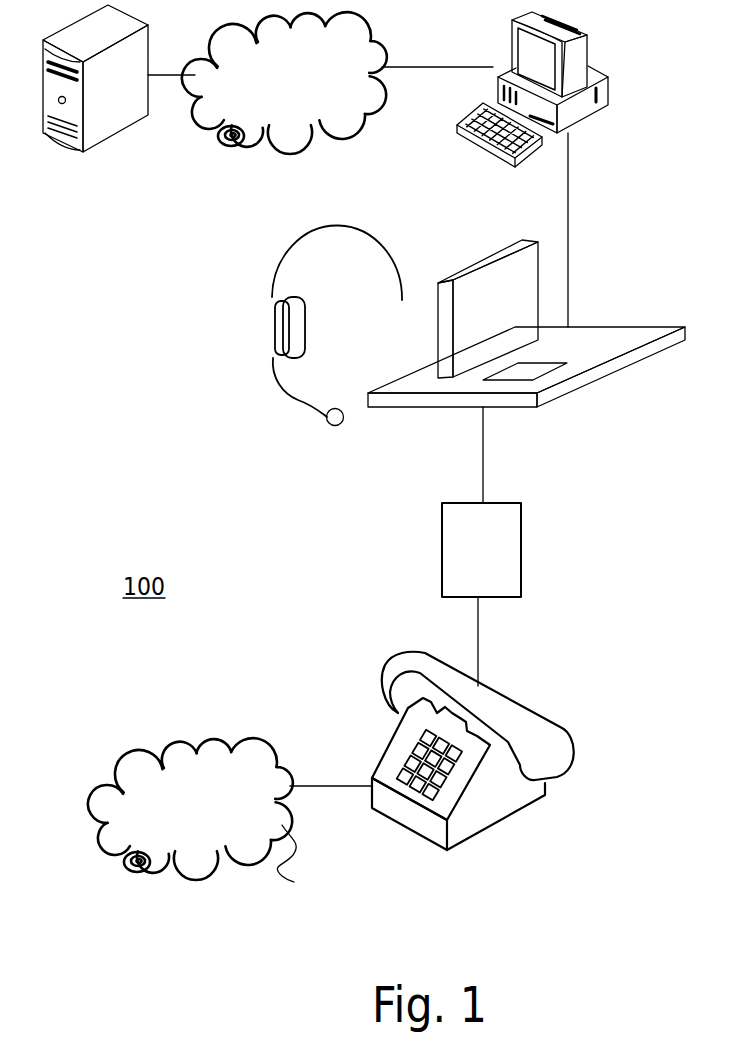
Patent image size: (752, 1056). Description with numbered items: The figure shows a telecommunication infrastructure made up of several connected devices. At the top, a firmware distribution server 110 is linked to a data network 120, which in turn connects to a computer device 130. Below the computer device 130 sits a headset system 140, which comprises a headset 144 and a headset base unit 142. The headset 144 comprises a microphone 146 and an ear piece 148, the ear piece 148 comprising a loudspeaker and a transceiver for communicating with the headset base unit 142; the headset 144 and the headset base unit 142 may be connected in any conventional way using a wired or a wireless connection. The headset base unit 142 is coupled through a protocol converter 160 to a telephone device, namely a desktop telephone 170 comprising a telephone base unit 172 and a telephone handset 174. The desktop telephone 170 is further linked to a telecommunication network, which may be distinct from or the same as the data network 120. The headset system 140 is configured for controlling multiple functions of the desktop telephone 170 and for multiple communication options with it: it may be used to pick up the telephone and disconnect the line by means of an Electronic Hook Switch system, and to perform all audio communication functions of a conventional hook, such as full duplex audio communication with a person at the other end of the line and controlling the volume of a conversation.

The firmware distribution server 110 is at (83, 152).
The data network 120 is at (300, 152).
The computer device 130 is at (600, 108).
The headset system 140 is at (263, 401).
The headset base unit 142 is at (588, 378).
The headset 144 is at (226, 391).
The microphone 146 is at (327, 427).
The ear piece 148 is at (276, 340).
The protocol converter 160 is at (518, 547).
The desktop telephone 170 is at (457, 789).
The telephone base unit 172 is at (403, 822).
The telephone handset 174 is at (502, 693).